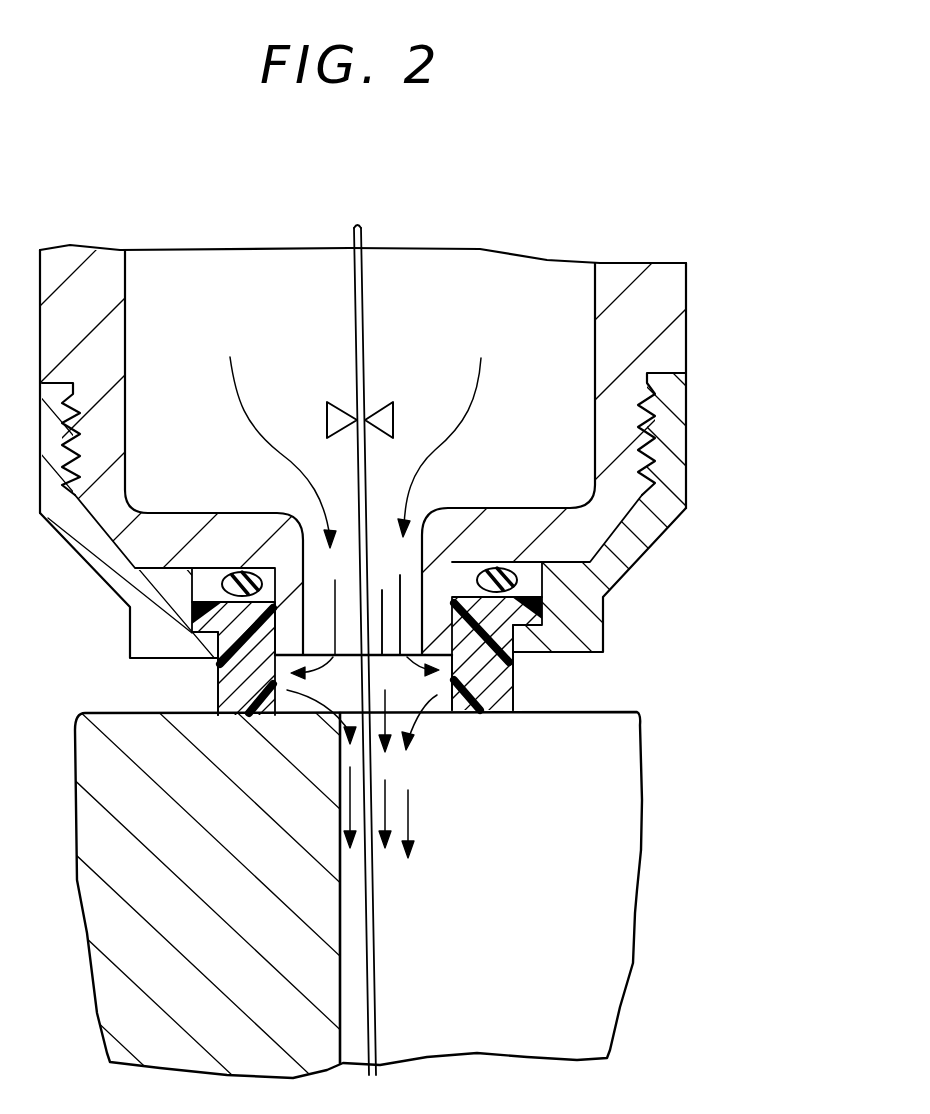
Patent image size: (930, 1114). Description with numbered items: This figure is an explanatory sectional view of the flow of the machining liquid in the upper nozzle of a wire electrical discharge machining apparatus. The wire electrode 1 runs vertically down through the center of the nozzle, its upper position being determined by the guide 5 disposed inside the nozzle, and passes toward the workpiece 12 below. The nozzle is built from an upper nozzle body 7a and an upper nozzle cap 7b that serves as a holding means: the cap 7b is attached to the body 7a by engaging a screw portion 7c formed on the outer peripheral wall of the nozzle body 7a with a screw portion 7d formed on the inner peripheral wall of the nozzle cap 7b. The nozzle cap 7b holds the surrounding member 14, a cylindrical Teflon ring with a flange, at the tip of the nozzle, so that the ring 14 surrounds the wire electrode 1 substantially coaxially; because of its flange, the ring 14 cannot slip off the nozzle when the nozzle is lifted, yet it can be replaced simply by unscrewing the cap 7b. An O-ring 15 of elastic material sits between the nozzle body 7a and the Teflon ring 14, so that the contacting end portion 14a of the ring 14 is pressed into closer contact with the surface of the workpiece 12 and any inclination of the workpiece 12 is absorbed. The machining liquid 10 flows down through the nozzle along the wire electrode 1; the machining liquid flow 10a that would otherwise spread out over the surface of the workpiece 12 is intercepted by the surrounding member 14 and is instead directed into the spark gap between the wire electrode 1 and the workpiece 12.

The wire electrode 1 is at (363, 318).
The guide 5 is at (393, 417).
The upper nozzle body 7a is at (687, 315).
The upper nozzle cap 7b is at (688, 466).
The screw portion 7c is at (68, 438).
The screw portion 7d is at (645, 427).
The machining liquid 10 is at (237, 384).
The machining liquid flow 10a is at (408, 650).
The workpiece 12 is at (641, 725).
The surrounding member 14 is at (509, 682).
The contacting end portion 14a is at (485, 714).
The O-ring 15 is at (503, 563).